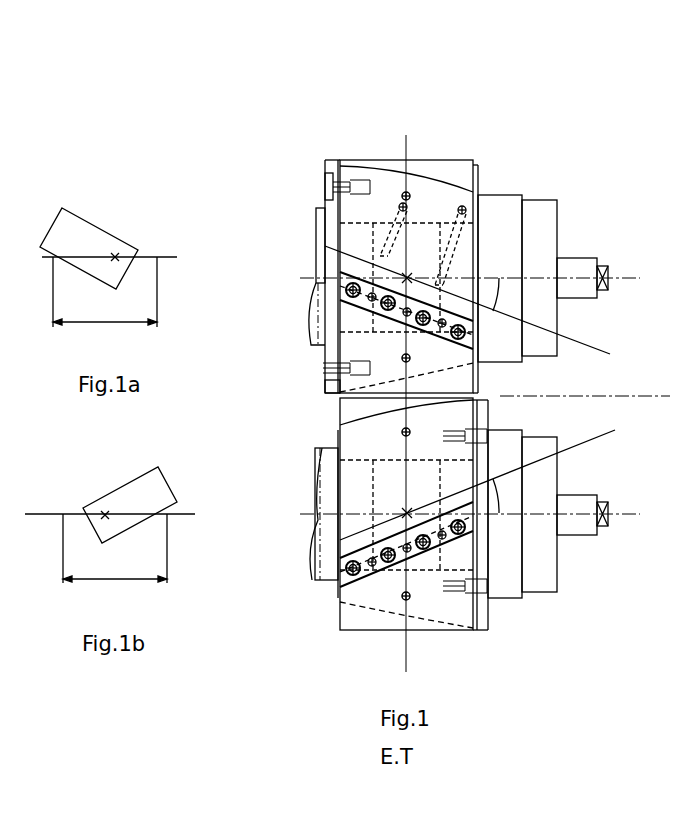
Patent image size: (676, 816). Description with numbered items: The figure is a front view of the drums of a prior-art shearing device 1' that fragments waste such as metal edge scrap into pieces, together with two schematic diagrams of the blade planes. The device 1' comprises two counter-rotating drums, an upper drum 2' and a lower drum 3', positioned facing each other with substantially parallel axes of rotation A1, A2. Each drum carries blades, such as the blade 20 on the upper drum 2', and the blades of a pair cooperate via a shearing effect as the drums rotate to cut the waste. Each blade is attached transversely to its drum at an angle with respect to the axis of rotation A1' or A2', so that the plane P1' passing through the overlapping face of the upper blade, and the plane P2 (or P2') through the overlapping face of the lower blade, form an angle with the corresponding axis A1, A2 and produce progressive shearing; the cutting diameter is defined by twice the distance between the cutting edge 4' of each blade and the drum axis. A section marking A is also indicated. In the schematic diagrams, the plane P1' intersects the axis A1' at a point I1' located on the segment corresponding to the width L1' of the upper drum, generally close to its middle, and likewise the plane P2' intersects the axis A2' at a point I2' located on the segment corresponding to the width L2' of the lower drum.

In FIG. 1, the shearing device 1' is at (405, 377).
In FIG. 1, the upper drum 2' is at (465, 258).
In FIG. 1, the lower drum 3' is at (459, 525).
In FIG. 1, the cutting edge 4' is at (406, 421).
In FIG. 1, the blade 20 is at (328, 250).
In FIG. 1, the plane passing through the overlapping face of the upper blade P1' is at (484, 307).
In FIG. 1A, the plane passing through the overlapping face of the upper blade P1' is at (80, 228).
In FIG. 1, the plane passing through the overlapping face of the lower blade P2 is at (493, 477).
In FIG. 1B, the plane passing through the overlapping face of the lower blade P2' is at (134, 490).
In FIG. 1, the axis of rotation of the upper drum A1 is at (587, 271).
In FIG. 1, the axis of rotation of the lower drum A2 is at (587, 508).
In FIG. 1A, the axis of rotation of the upper drum A1' is at (130, 256).
In FIG. 1B, the axis of rotation of the lower drum A2' is at (129, 508).
In FIG. 1A, the intersection point I1' is at (95, 246).
In FIG. 1B, the intersection point I2' is at (118, 505).
In FIG. 1A, the width of the upper drum L1' is at (105, 304).
In FIG. 1B, the width of the lower drum L2' is at (115, 564).
In FIG. 1, the section plane A- A is at (406, 143).